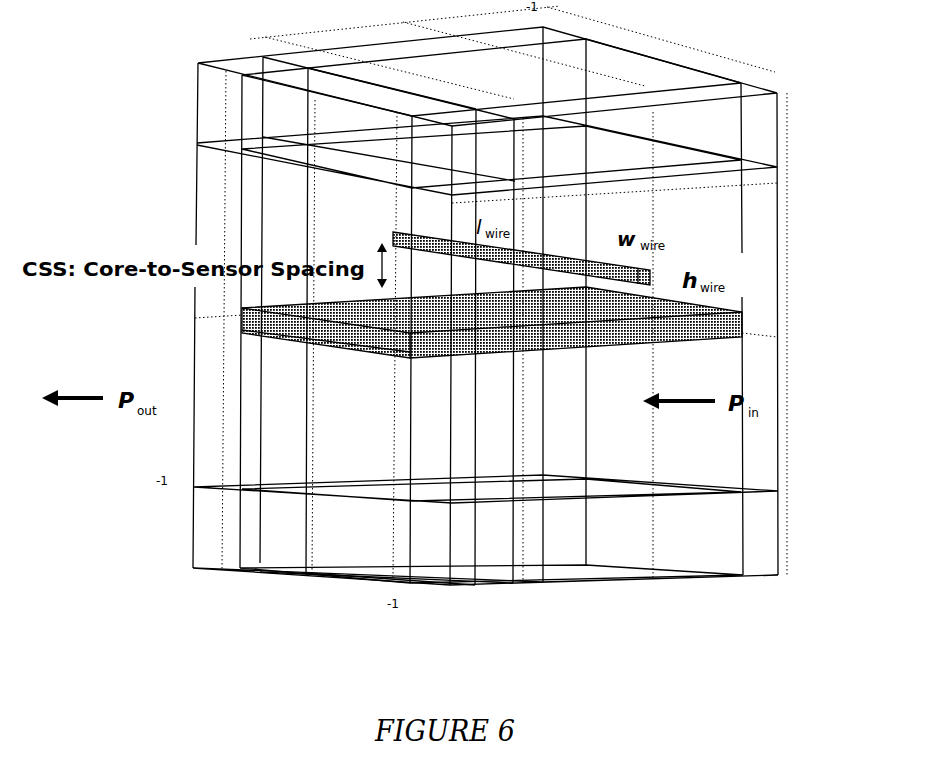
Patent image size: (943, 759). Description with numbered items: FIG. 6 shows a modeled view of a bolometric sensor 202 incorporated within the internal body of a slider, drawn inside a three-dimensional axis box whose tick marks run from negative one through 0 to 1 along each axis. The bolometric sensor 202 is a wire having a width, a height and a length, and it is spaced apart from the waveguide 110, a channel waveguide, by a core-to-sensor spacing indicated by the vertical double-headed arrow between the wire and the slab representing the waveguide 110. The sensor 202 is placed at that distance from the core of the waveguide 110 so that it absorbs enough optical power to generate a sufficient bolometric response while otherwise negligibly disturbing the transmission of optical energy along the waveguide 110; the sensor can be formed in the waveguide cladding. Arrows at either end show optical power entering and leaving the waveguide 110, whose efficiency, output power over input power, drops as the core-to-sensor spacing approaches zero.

The waveguide 110 is at (313, 332).
The bolometric sensor 202 is at (553, 255).
The axis tick label 1 is at (208, 317).
The axis tick label 0 is at (277, 309).